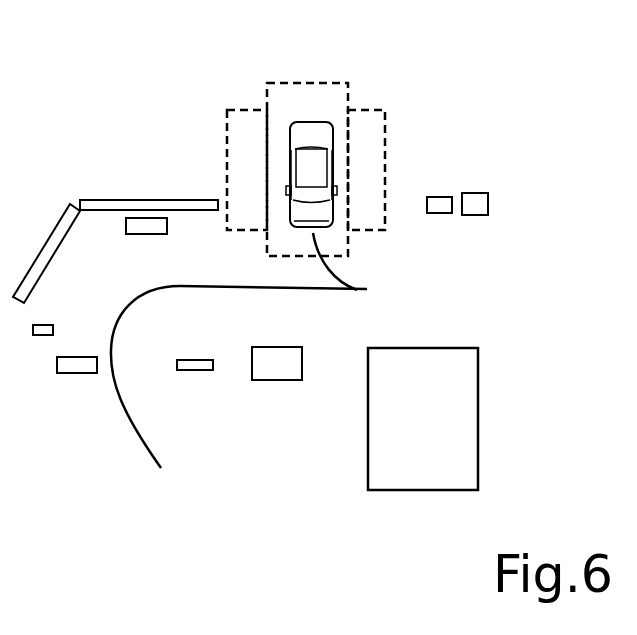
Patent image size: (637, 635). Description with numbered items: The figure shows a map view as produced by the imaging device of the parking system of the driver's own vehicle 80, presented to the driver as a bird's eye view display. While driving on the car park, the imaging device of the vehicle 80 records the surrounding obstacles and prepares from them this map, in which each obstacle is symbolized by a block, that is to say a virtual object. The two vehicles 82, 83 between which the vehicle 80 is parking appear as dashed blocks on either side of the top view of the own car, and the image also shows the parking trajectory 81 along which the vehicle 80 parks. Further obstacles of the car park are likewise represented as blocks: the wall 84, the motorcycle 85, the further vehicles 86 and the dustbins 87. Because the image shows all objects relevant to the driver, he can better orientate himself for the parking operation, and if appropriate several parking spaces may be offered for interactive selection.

The vehicle 80 is at (313, 140).
The trajectory 81 is at (240, 291).
The vehicle 82 is at (385, 117).
The vehicle 83 is at (240, 143).
The wall 84 is at (88, 203).
The motorcycle 85 is at (50, 322).
The further vehicles 86 is at (410, 360).
The dustbins 87 is at (473, 195).